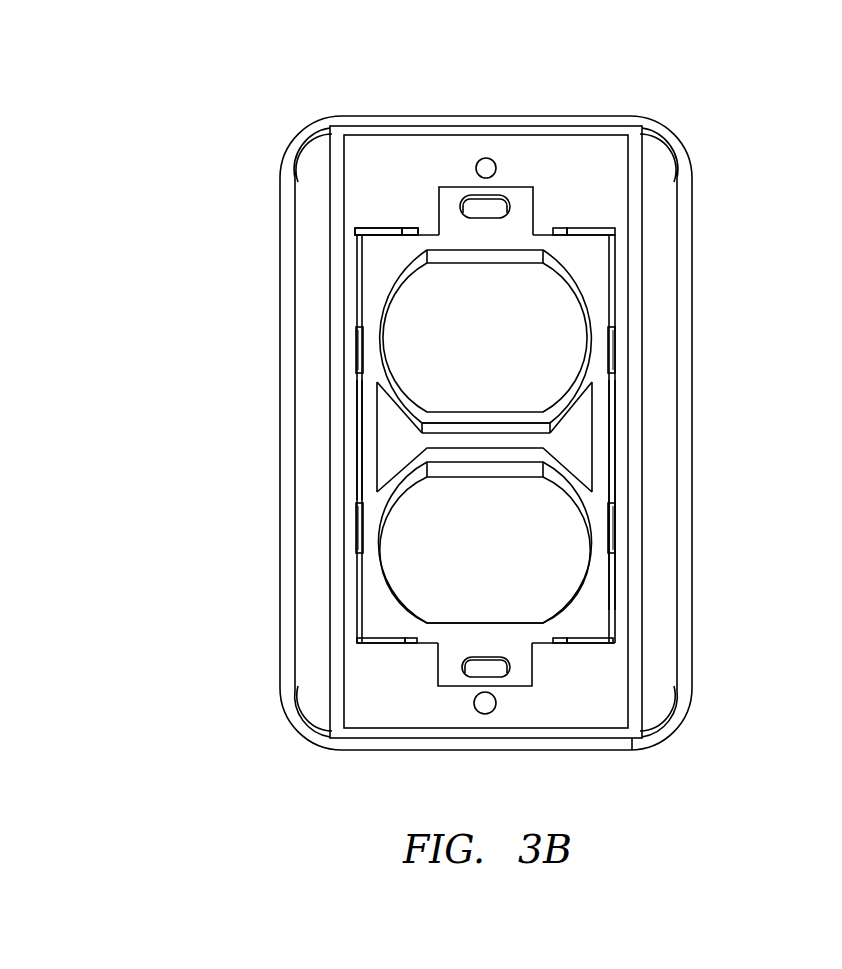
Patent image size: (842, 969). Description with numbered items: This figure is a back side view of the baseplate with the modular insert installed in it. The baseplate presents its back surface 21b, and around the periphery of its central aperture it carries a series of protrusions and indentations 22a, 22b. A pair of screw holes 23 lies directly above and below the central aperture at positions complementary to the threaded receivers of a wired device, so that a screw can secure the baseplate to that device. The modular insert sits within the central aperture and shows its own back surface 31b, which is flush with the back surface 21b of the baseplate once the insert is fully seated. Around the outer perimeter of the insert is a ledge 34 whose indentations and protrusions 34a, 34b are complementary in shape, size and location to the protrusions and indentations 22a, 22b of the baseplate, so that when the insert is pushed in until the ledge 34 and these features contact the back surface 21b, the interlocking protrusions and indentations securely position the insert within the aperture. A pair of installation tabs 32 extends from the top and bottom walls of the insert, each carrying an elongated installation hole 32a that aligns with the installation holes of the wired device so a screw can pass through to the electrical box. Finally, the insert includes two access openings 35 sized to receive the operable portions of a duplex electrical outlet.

The back surface 21b is at (597, 695).
The protrusions 22a is at (358, 350).
The indentations 22b is at (567, 230).
The screw holes 23 is at (486, 165).
The back surface 31b is at (378, 243).
The installation tabs 32 is at (523, 187).
The elongated installation hole 32a is at (478, 207).
The ledge 34 is at (355, 437).
The indentations 34a is at (487, 424).
The protrusions 34b is at (485, 397).
The access openings 35 is at (498, 347).